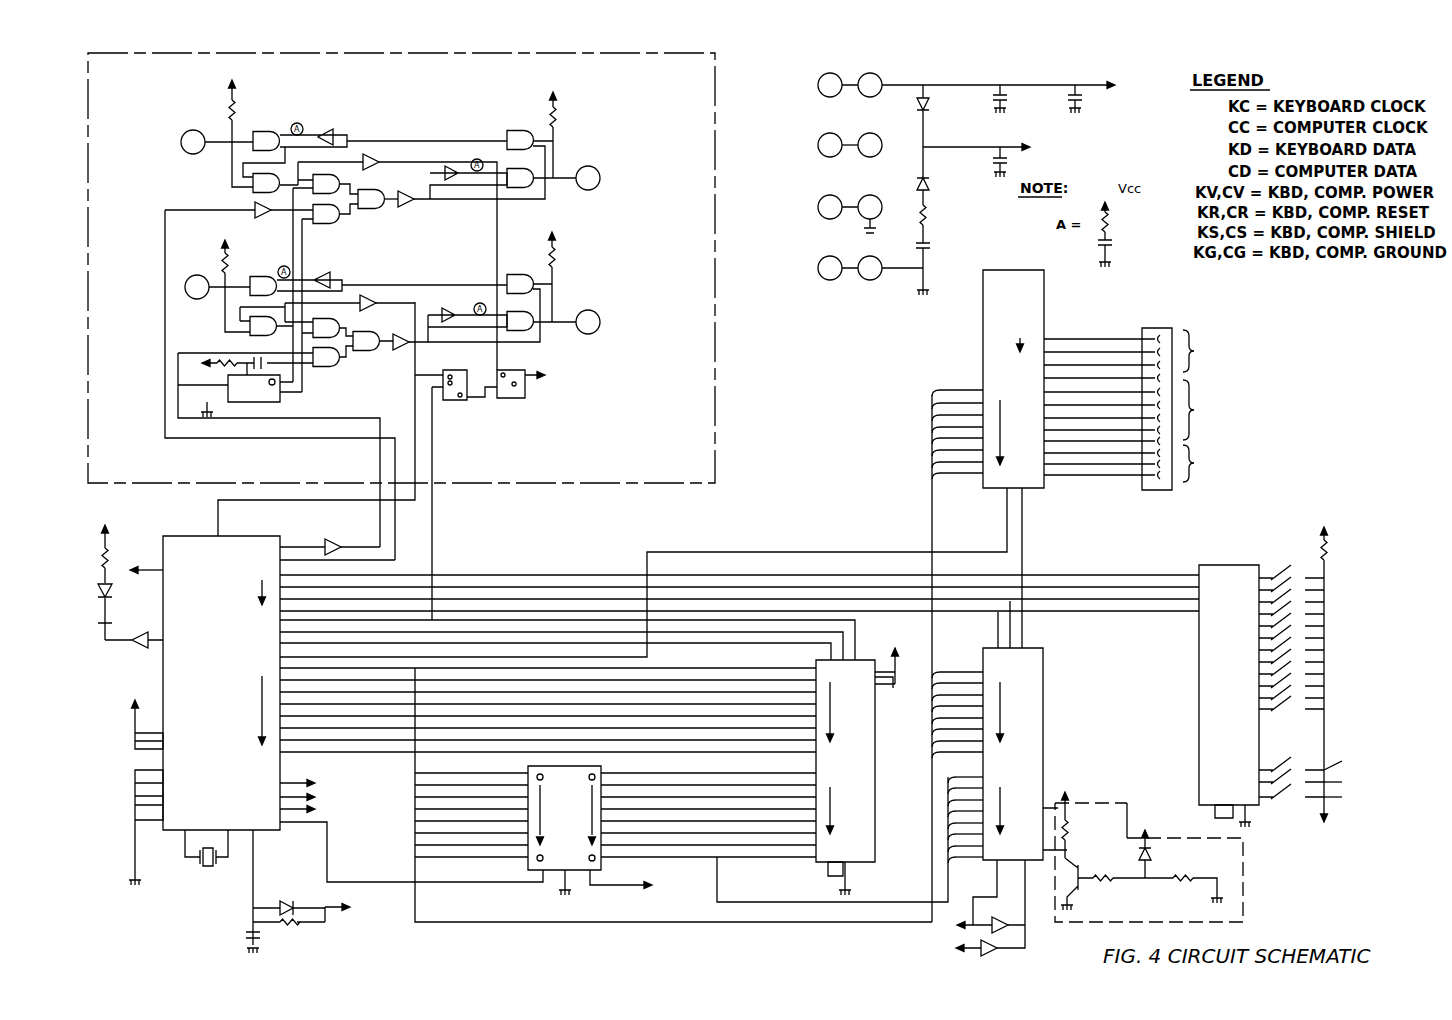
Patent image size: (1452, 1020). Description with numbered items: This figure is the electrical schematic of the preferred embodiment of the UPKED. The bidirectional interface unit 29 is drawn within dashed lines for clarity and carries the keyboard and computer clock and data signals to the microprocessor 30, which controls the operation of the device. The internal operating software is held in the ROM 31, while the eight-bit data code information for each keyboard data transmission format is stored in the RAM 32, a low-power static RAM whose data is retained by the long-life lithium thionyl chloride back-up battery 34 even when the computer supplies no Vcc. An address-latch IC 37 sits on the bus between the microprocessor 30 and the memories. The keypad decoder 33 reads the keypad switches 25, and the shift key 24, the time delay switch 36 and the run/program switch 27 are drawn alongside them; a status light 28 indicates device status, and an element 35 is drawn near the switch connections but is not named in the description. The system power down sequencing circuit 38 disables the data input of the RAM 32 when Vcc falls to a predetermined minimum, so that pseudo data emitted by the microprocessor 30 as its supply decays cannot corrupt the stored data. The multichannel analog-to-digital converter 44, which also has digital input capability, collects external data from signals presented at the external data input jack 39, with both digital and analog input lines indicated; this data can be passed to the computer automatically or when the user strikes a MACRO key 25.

The shift key 24 is at (1403, 788).
The keypad switches 25 is at (1326, 640).
The run/program switch 27 is at (1366, 748).
The status light 28 is at (103, 600).
The bidirectional interface unit 29 is at (716, 366).
The microprocessor 30 is at (175, 670).
The ROM 31 is at (825, 832).
The RAM 32 is at (1044, 683).
The keypad decoder 33 is at (1199, 744).
The back-up battery 34 is at (923, 250).
The switch contacts 35 is at (1270, 612).
The time delay switch 36 is at (1365, 816).
The address-latch IC 37 is at (555, 850).
The system power down sequencing circuit 38 is at (1247, 906).
The external data input jack 39 is at (1152, 488).
The multichannel analog-to-digital converter 44 is at (1030, 488).